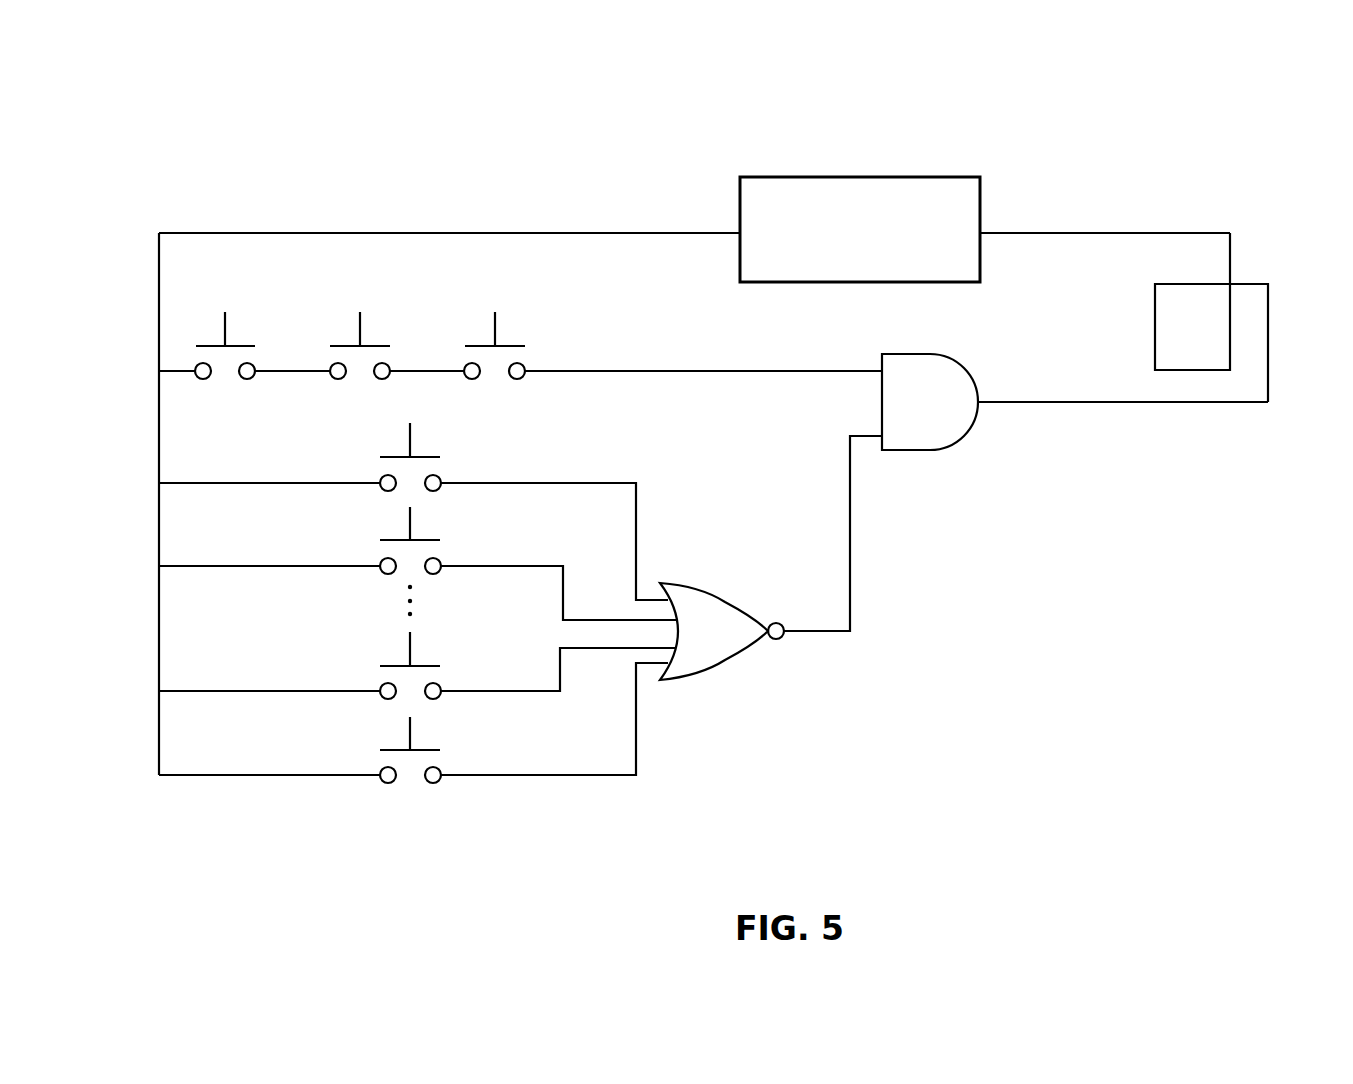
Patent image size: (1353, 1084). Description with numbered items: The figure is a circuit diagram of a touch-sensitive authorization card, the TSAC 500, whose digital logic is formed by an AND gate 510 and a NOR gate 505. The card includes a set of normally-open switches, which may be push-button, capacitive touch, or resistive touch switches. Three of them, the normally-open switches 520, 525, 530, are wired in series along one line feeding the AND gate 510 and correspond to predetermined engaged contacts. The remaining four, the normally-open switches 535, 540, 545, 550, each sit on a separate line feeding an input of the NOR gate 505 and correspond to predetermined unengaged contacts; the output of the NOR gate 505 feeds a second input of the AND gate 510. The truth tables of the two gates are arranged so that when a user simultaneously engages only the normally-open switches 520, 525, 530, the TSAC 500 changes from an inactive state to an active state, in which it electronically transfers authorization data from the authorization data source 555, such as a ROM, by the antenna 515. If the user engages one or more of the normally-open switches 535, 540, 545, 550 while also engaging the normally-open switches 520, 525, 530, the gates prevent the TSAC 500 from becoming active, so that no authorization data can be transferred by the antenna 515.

The TSAC 500 is at (220, 112).
The NOR gate 505 is at (722, 631).
The AND gate 510 is at (930, 402).
The antenna 515 is at (1283, 268).
The normally-open switch 520 is at (237, 313).
The normally-open switch 525 is at (372, 313).
The normally-open switch 530 is at (533, 307).
The normally-open switch 535 is at (437, 440).
The normally-open switch 540 is at (433, 522).
The normally-open switch 545 is at (432, 645).
The normally-open switch 550 is at (440, 733).
The authorization data source 555 is at (860, 229).